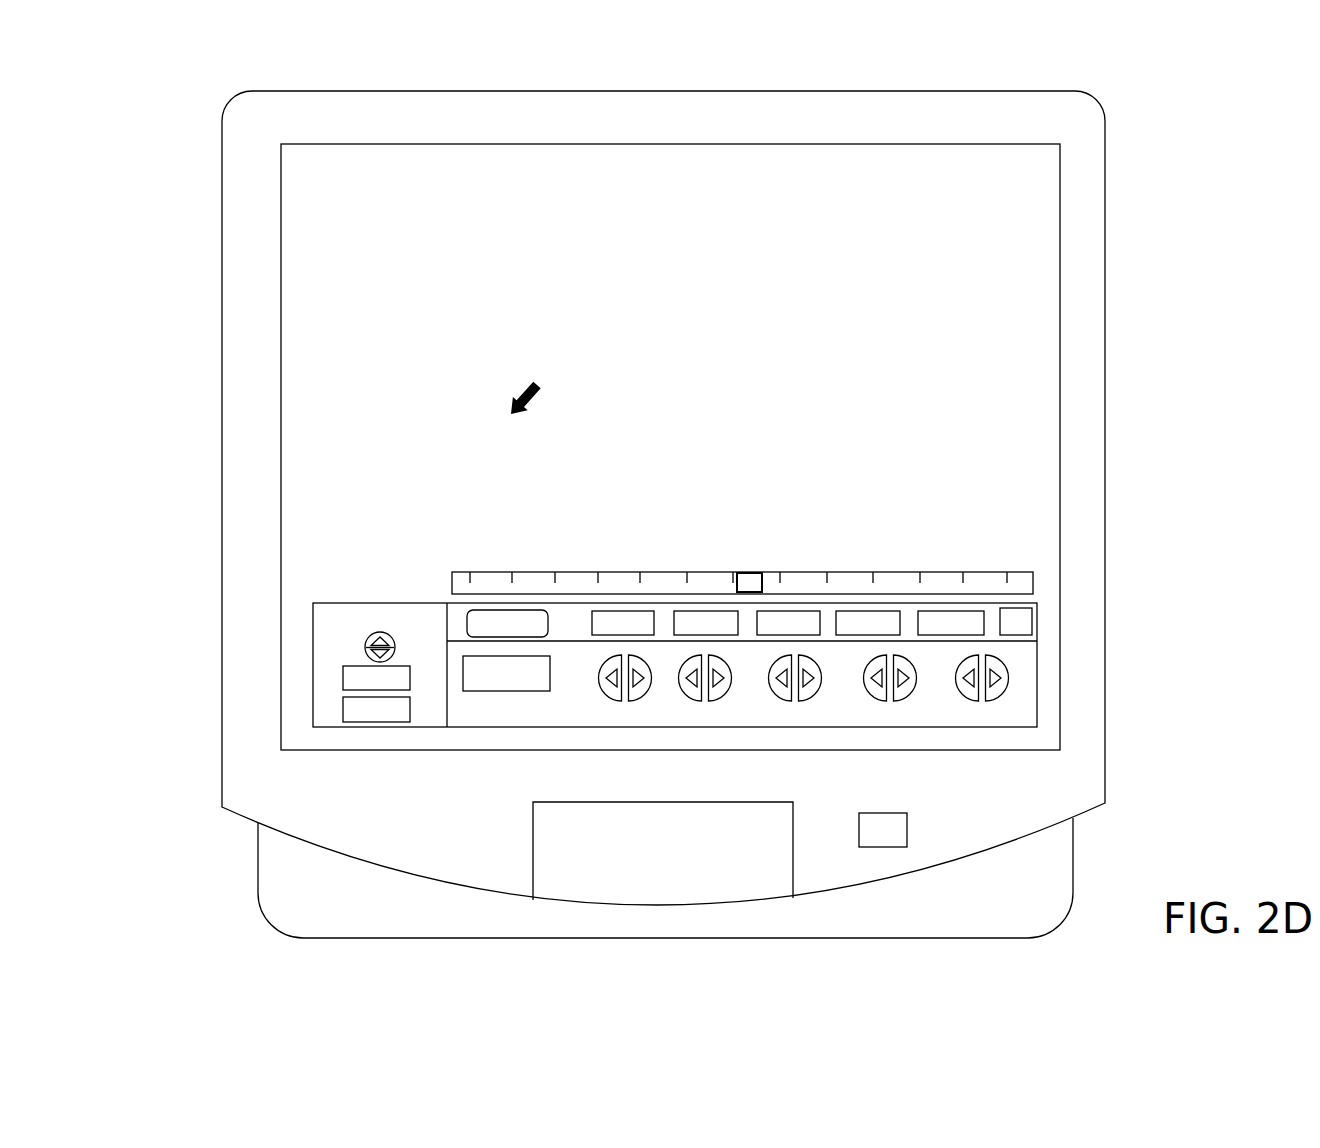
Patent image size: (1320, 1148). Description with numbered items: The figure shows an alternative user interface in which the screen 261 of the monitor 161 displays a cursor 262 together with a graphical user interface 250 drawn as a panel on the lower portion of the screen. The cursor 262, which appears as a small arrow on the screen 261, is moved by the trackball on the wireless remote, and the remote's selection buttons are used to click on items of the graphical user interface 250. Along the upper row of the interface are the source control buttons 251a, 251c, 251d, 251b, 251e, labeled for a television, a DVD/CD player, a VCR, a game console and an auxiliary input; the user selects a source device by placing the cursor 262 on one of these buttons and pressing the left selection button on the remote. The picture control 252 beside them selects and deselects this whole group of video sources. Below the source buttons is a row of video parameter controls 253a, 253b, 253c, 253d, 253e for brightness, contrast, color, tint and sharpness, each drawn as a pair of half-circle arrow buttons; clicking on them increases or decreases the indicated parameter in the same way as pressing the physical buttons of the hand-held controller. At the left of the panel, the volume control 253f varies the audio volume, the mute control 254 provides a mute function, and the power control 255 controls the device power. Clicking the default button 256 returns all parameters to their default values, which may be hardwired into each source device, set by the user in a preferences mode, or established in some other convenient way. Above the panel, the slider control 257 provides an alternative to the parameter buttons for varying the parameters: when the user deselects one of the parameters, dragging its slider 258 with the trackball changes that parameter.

The monitor 161 is at (1118, 187).
The screen 261 is at (1018, 207).
The cursor 262 is at (527, 383).
The graphical user interface 250 is at (1048, 664).
The slider control 257 is at (452, 585).
The slider 258 is at (748, 572).
The picture control 252 is at (497, 610).
The source control button 251a is at (620, 611).
The source control button 251c is at (702, 611).
The source control button 251d is at (795, 611).
The source control button 251b is at (880, 611).
The source control button 251e is at (970, 611).
The default button 256 is at (487, 691).
The video parameter control 253a is at (602, 685).
The video parameter control 253b is at (684, 688).
The video parameter control 253c is at (775, 685).
The video parameter control 253d is at (870, 688).
The video parameter control 253e is at (962, 684).
The volume control 253f is at (365, 648).
The mute control 254 is at (343, 680).
The power control 255 is at (343, 708).